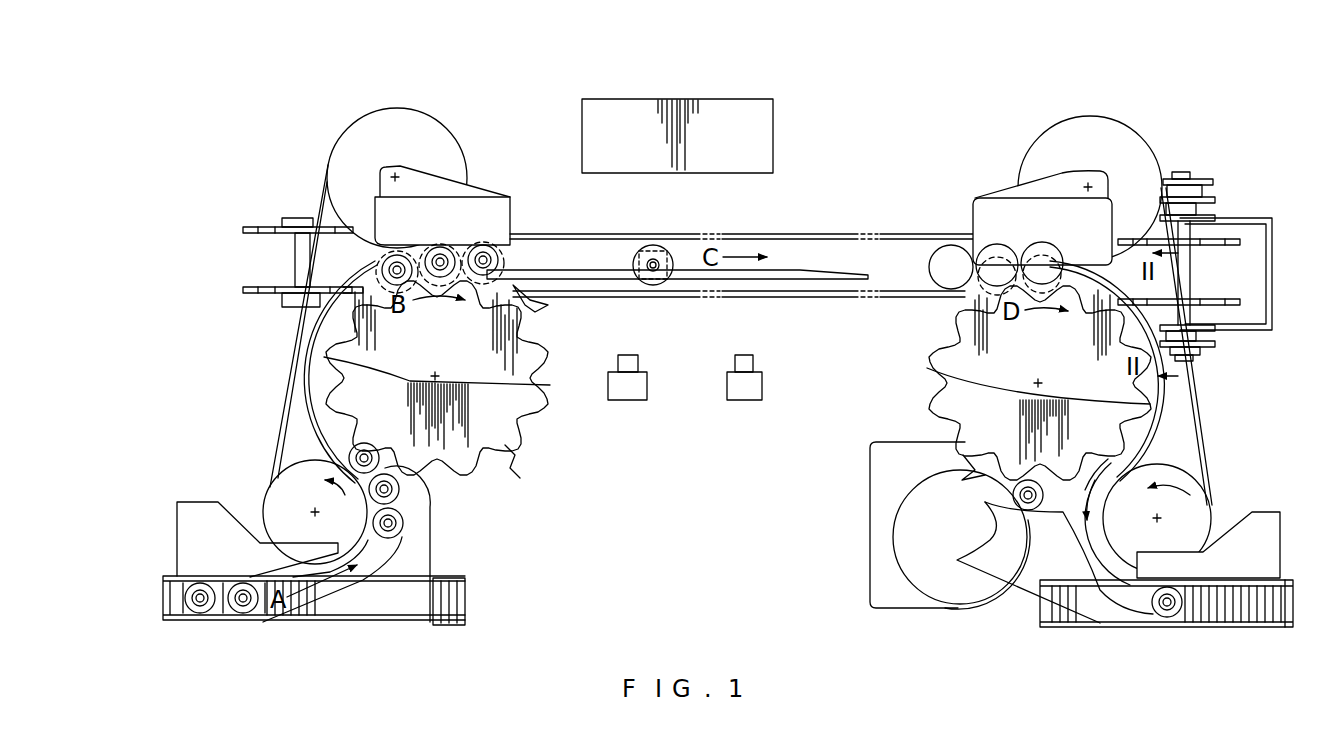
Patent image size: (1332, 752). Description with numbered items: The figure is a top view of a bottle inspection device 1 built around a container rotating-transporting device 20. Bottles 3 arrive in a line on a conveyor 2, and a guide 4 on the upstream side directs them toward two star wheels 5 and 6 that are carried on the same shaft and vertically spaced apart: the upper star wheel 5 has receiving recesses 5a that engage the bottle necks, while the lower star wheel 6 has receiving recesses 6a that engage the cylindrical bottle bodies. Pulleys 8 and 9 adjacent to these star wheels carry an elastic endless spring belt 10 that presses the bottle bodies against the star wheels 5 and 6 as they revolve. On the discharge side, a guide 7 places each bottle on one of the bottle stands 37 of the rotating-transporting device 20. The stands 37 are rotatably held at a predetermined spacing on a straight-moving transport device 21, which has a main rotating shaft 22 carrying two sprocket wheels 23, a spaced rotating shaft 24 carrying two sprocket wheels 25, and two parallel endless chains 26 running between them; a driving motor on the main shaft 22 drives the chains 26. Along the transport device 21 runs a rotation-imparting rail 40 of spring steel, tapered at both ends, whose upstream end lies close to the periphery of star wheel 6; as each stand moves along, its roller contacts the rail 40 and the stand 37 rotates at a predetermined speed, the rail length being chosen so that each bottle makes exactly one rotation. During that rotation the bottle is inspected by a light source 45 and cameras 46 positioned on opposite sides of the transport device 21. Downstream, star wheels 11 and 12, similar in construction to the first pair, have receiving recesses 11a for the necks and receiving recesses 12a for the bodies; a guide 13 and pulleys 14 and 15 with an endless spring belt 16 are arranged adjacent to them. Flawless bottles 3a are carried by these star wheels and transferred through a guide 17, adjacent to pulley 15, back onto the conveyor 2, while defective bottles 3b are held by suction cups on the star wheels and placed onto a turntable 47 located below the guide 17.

The bottle inspection device 1 is at (822, 190).
The conveyor 2 is at (316, 612).
The bottles 3 is at (372, 450).
The normal or flawless bottles 3a is at (1165, 616).
The defective bottles 3b is at (1022, 510).
The guide 4 is at (200, 505).
The star wheel 5 is at (545, 357).
The receiving recesses 5a is at (548, 306).
The star wheel 6 is at (530, 400).
The receiving recesses 6a is at (512, 462).
The guide 7 is at (493, 207).
The pulley 8 is at (275, 500).
The pulley 9 is at (345, 152).
The elastic endless spring belt 10 is at (288, 375).
The star wheel 11 is at (945, 356).
The receiving recesses 11a is at (1050, 273).
The star wheel 12 is at (955, 400).
The receiving recesses 12a is at (968, 462).
The guide 13 is at (975, 212).
The pulley 14 is at (1140, 155).
The pulley 15 is at (1187, 490).
The endless spring belt 16 is at (1197, 408).
The guide 17 is at (1097, 612).
The container rotating-transporting device 20 is at (698, 226).
The transport device 21 is at (1222, 205).
The main rotating shaft 22 is at (1192, 268).
The sprocket wheels 23 is at (1245, 242).
The rotating shaft 24 is at (297, 255).
The sprocket wheels 25 is at (276, 227).
The endless chains 26 is at (822, 236).
The bottle stands 37 is at (404, 256).
The rotation-imparting rail 40 is at (832, 273).
The light source 45 is at (677, 118).
The cameras 46 is at (628, 400).
The turntable 47 is at (952, 598).